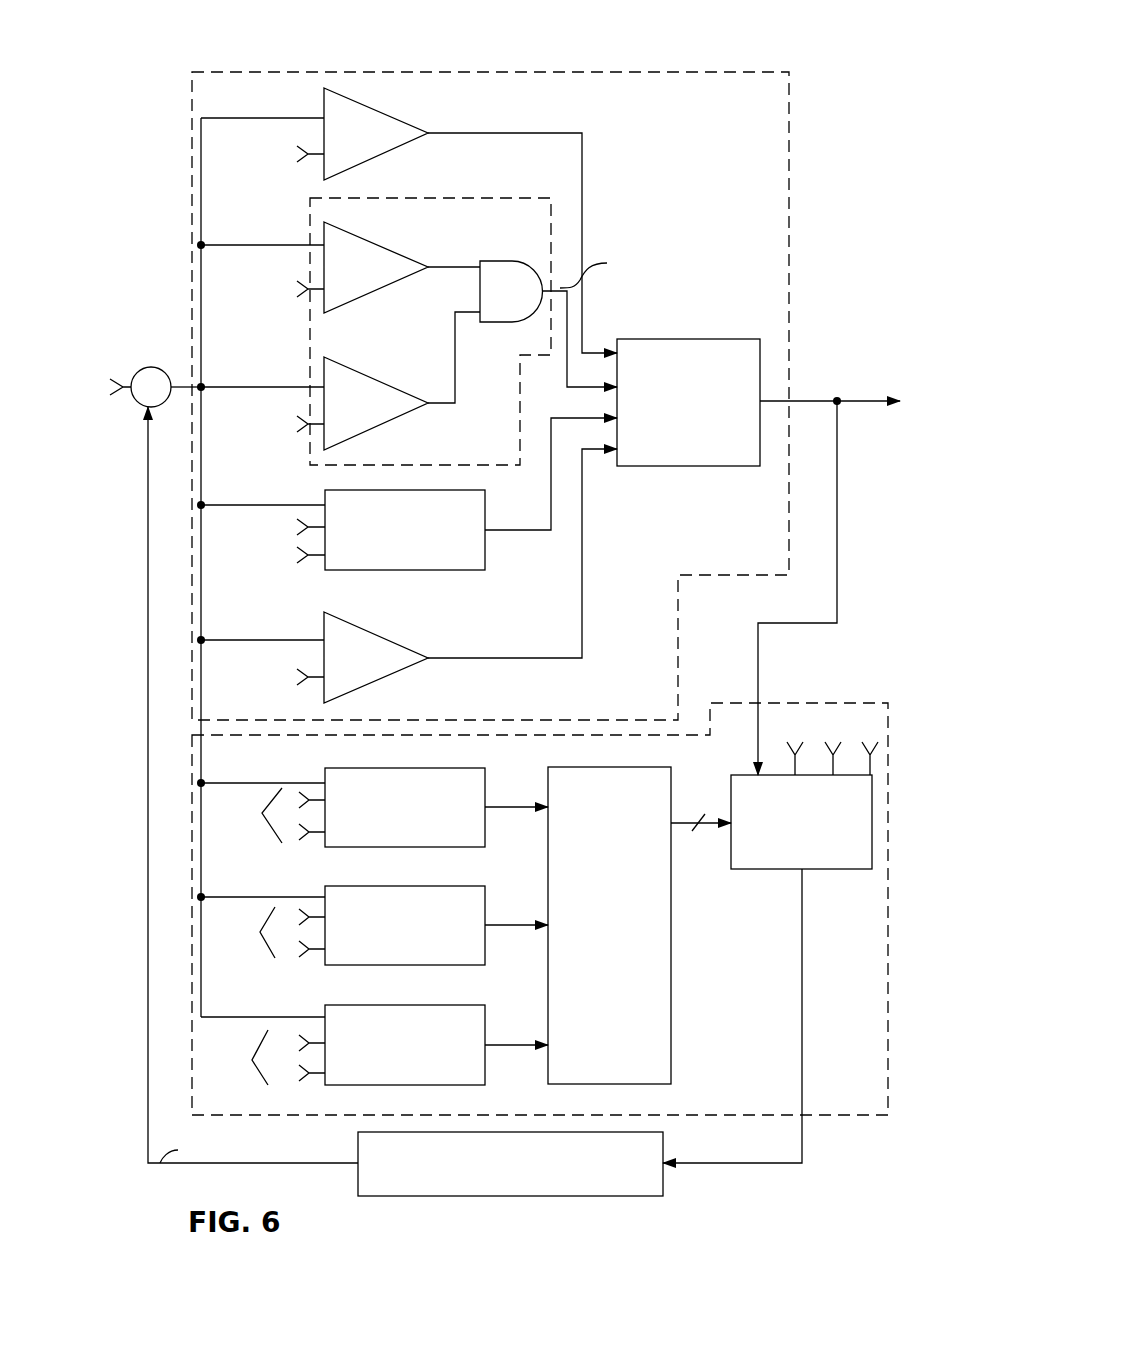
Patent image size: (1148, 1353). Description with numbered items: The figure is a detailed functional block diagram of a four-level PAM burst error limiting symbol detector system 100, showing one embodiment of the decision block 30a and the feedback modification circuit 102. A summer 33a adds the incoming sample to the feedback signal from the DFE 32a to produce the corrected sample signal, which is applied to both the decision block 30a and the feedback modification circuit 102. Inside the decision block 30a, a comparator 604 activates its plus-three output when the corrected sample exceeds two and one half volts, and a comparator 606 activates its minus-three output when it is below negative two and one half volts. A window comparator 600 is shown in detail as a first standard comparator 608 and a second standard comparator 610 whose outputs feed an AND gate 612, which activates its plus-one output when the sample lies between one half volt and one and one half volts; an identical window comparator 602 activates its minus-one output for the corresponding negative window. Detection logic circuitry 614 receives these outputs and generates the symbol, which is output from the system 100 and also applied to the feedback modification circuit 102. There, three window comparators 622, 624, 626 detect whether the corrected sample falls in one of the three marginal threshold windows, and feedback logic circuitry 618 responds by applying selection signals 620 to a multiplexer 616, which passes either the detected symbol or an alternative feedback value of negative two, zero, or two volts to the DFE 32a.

The burst error limiting symbol detector system 100 is at (137, 760).
The decision block 30a is at (789, 258).
The summer 33a is at (150, 367).
The DFE 32a is at (663, 1178).
The window comparator 600 is at (437, 198).
The window comparator 602 is at (485, 562).
The comparator 604 is at (383, 113).
The comparator 606 is at (390, 673).
The first standard comparator 608 is at (385, 247).
The second standard comparator 610 is at (383, 382).
The AND gate 612 is at (513, 261).
The detection logic circuitry 614 is at (688, 339).
The multiplexer 616 is at (822, 869).
The feedback logic circuitry 618 is at (671, 925).
The selection signals 620 is at (688, 825).
The window comparator 622 is at (405, 768).
The window comparator 624 is at (405, 886).
The window comparator 626 is at (405, 1005).
The feedback modification circuit 102 is at (822, 1115).